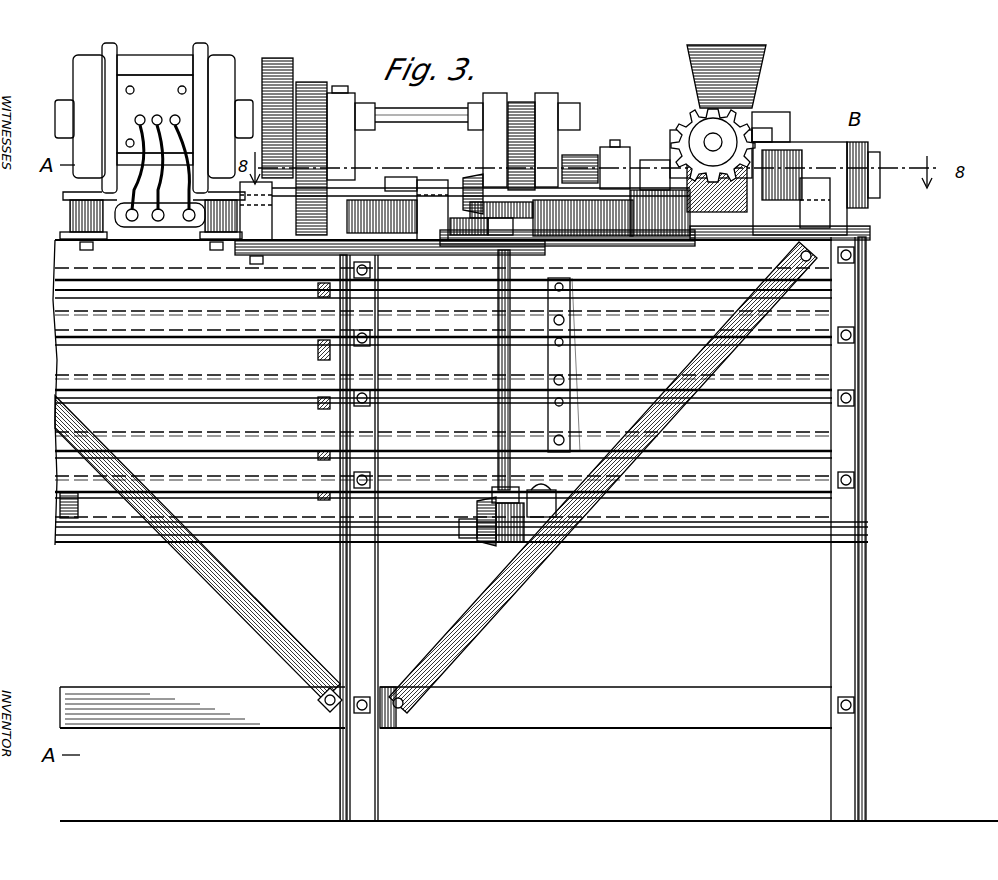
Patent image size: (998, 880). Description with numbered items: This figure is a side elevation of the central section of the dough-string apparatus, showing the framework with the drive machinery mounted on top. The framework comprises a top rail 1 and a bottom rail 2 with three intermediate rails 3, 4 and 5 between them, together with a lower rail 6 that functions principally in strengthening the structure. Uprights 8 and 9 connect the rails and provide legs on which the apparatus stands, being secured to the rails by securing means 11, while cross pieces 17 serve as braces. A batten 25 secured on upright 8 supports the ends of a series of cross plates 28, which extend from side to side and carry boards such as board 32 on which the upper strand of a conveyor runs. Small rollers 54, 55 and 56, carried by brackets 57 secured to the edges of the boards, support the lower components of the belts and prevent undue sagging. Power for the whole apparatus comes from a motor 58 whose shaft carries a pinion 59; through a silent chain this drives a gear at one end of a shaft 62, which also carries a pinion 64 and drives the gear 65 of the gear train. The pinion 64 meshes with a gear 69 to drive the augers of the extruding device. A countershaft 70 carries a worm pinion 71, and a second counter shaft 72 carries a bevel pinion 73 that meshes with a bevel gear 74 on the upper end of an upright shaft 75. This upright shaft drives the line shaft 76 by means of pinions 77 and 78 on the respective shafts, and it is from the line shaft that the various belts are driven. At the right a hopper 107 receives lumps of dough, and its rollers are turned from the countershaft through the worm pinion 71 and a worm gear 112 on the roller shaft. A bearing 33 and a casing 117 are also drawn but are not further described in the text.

The top rail 1 is at (858, 229).
The bottom rail 2 is at (775, 540).
The intermediate rail 3 is at (790, 325).
The intermediate rail 4 is at (783, 388).
The intermediate rail 5 is at (443, 445).
The lower rail 6 is at (168, 695).
The upright 8 is at (343, 592).
The upright 9 is at (840, 615).
The securing means 11 is at (366, 278).
The cross pieces 17 is at (240, 605).
The batten 25 is at (335, 516).
The cross plates 28 is at (322, 362).
The board 32 is at (782, 487).
The bearing block 33 is at (545, 520).
The small roller 54 is at (603, 365).
The small roller 55 is at (572, 370).
The small roller 56 is at (576, 435).
The brackets 57 is at (572, 290).
The motor 58 is at (82, 75).
The pinion 59 is at (275, 108).
The shaft 62 is at (448, 112).
The pinion 64 is at (520, 102).
The gear 65 is at (312, 100).
The gear 69 is at (540, 112).
The countershaft 70 is at (588, 190).
The worm pinion 71 is at (700, 215).
The second counter shaft 72 is at (402, 188).
The bevel pinion 73 is at (475, 180).
The bevel gear 74 is at (545, 222).
The upright shaft 75 is at (509, 440).
The line shaft 76 is at (408, 528).
The pinion 77 is at (508, 542).
The pinion 78 is at (482, 546).
The hopper 107 is at (765, 82).
The worm gear 112 is at (700, 110).
The feed casing 117 is at (700, 135).